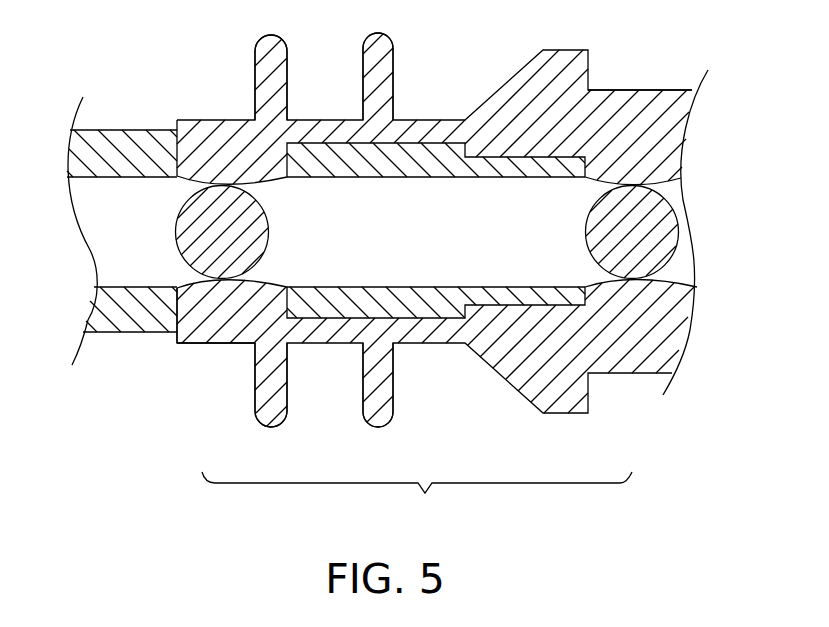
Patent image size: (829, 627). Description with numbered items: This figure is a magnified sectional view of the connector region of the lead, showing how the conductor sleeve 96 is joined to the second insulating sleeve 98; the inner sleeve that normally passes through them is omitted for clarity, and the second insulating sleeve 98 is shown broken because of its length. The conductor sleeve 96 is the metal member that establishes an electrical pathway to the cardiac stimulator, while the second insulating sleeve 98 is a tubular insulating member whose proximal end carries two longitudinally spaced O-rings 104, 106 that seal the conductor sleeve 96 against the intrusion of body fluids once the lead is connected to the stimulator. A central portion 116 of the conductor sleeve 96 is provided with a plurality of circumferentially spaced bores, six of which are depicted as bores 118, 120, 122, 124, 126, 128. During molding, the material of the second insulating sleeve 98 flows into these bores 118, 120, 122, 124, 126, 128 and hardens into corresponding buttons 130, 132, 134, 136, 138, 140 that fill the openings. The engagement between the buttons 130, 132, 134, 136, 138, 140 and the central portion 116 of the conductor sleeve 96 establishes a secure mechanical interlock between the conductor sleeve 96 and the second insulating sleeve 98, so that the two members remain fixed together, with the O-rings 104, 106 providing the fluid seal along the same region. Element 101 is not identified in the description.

The conductor sleeve 96 is at (112, 130).
The second insulating sleeve 98 is at (677, 90).
The housing 101 is at (428, 120).
The O-ring 104 is at (271, 427).
The O-ring 106 is at (377, 427).
The central portion 116 is at (425, 493).
The bore 118 is at (155, 158).
The bore 120 is at (177, 228).
The bore 122 is at (175, 315).
The bore 124 is at (678, 153).
The bore 126 is at (672, 200).
The bore 128 is at (587, 297).
The button 130 is at (242, 178).
The button 132 is at (221, 270).
The button 134 is at (225, 292).
The button 136 is at (624, 167).
The button 138 is at (663, 232).
The button 140 is at (657, 287).